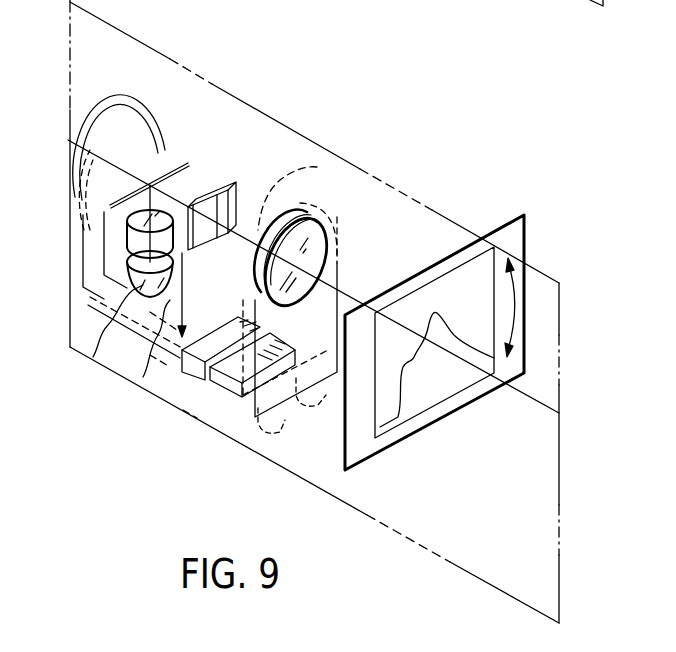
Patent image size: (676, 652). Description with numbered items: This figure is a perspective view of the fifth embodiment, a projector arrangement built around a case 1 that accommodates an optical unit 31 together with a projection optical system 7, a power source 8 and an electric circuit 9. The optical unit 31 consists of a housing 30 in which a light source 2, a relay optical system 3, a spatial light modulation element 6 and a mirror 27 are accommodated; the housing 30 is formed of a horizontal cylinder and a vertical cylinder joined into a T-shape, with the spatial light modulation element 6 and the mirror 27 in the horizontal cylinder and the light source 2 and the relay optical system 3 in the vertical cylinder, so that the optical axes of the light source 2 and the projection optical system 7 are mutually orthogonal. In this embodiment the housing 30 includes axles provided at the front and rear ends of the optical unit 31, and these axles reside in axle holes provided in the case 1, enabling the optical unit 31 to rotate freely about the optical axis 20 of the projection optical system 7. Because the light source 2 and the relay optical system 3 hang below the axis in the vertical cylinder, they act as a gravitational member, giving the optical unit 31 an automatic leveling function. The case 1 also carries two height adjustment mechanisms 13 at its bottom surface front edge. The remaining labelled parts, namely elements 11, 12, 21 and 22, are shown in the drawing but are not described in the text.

The case 1 is at (88, 308).
The light source 2 is at (93, 357).
The relay optical system 3 is at (130, 246).
The spatial light modulation element 6 is at (218, 212).
The projection optical system 7 is at (312, 237).
The power source 8 is at (192, 366).
The electric circuit 9 is at (225, 385).
The display panel 11 is at (520, 232).
The display screen 12 is at (477, 268).
The height adjustment mechanisms 13 is at (262, 445).
The optical axis 20 is at (532, 395).
The base plate 21 is at (143, 377).
The bottom edge 22 is at (457, 543).
The mirror 27 is at (168, 171).
The housing 30 is at (317, 167).
The optical unit 31 is at (220, 163).